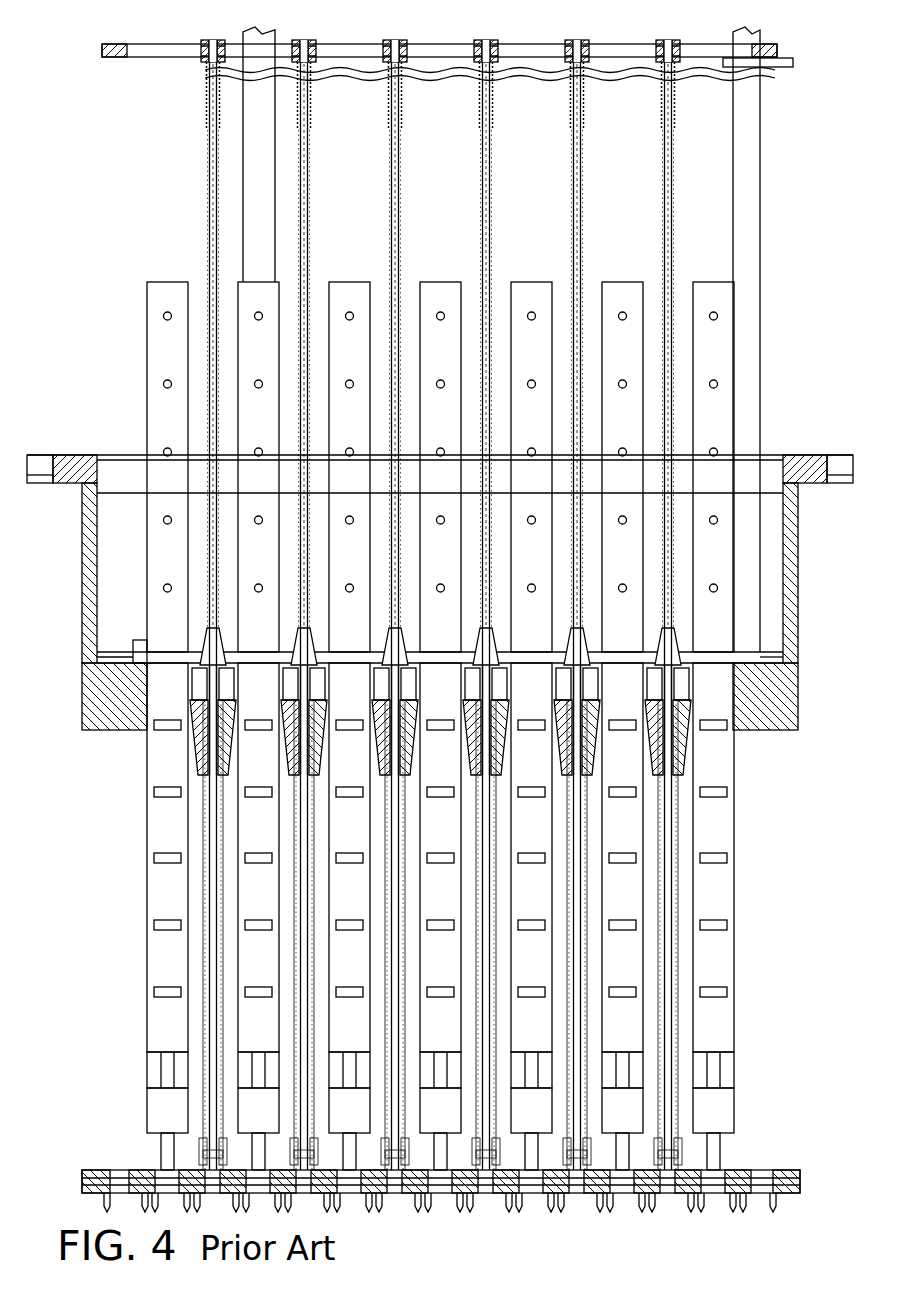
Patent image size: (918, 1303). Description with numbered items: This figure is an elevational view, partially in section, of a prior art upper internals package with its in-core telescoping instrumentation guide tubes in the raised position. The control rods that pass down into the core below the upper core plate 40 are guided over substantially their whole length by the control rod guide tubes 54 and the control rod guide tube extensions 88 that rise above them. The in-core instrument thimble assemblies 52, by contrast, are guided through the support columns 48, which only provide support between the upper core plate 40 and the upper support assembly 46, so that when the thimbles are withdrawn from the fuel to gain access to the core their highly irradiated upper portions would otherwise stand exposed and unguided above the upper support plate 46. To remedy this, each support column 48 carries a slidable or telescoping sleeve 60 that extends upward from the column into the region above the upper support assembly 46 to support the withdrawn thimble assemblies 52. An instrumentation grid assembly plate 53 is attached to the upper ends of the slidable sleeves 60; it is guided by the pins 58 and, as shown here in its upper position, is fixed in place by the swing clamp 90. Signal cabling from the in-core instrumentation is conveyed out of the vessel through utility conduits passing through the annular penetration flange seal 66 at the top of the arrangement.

The upper core plate 40 is at (800, 1168).
The upper support assembly 46 is at (105, 735).
The support columns 48 is at (223, 978).
The in-core instrument thimble assemblies 52 is at (215, 1170).
The instrumentation grid assembly plate 53 is at (778, 47).
The control rod guide tubes 54 is at (153, 832).
The pins 58 is at (275, 160).
The slidable sleeve 60 is at (210, 200).
The annular penetration flange seal 66 is at (203, 44).
The control rod guide tube extensions 88 is at (155, 282).
The swing clamp 90 is at (786, 68).